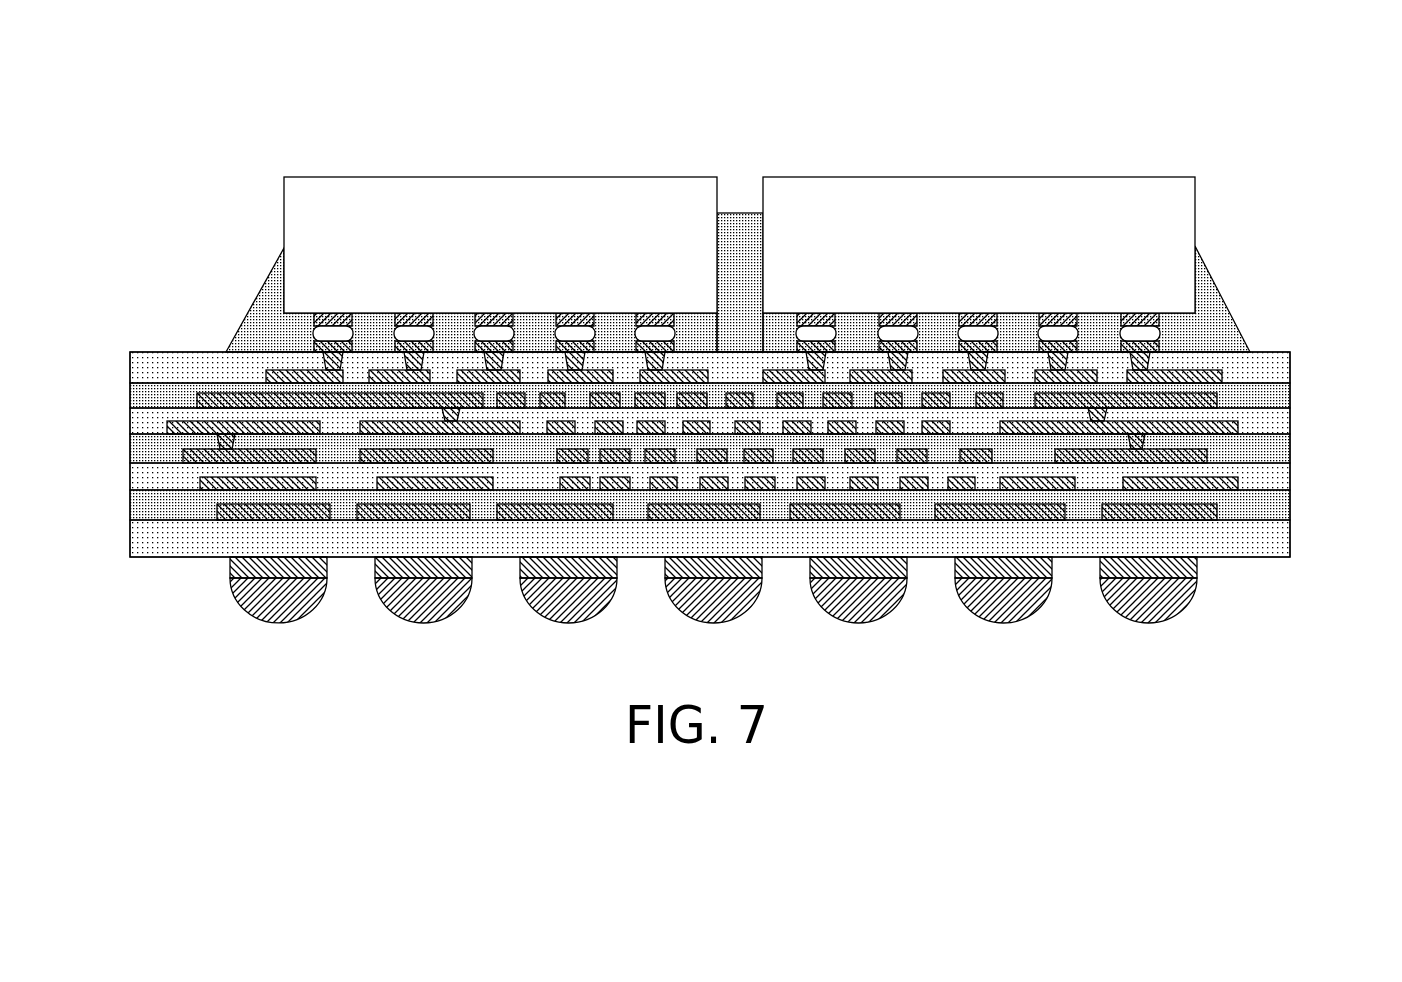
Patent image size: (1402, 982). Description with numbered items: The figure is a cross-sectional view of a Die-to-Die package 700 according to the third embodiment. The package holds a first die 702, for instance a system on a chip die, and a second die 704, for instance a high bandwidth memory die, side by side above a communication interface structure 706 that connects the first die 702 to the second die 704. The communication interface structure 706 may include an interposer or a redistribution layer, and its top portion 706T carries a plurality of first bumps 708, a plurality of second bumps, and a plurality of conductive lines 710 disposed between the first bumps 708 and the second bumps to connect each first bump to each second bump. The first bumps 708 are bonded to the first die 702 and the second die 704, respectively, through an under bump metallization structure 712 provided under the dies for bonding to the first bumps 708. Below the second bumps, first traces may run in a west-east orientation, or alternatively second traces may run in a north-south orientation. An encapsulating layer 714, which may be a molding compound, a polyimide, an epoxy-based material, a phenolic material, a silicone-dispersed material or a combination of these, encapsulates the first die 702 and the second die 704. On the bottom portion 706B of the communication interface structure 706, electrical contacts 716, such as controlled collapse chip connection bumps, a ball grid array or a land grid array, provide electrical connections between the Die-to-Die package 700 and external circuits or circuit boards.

The Die-to-Die package 700 is at (702, 382).
The first die 702 is at (445, 190).
The second die 704 is at (983, 190).
The communication interface structure 706 is at (702, 371).
The top portion of the communication interface structure 706T is at (722, 256).
The bottom portion of the communication interface structure 706B is at (652, 579).
The first bumps 708 is at (807, 228).
The conductive lines 710 is at (1222, 375).
The under bump metallization (UBM) structure 712 is at (333, 328).
The encapsulating layer 714 is at (737, 230).
The electrical contacts 716 is at (277, 622).